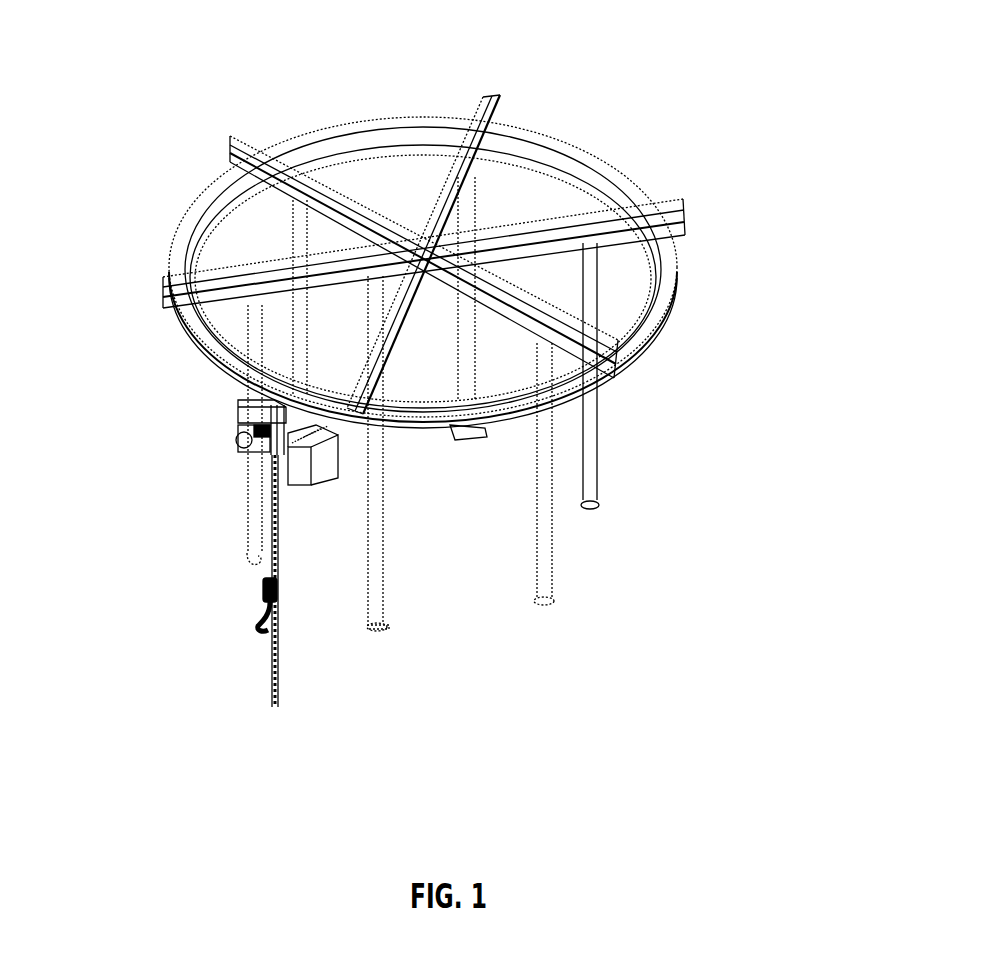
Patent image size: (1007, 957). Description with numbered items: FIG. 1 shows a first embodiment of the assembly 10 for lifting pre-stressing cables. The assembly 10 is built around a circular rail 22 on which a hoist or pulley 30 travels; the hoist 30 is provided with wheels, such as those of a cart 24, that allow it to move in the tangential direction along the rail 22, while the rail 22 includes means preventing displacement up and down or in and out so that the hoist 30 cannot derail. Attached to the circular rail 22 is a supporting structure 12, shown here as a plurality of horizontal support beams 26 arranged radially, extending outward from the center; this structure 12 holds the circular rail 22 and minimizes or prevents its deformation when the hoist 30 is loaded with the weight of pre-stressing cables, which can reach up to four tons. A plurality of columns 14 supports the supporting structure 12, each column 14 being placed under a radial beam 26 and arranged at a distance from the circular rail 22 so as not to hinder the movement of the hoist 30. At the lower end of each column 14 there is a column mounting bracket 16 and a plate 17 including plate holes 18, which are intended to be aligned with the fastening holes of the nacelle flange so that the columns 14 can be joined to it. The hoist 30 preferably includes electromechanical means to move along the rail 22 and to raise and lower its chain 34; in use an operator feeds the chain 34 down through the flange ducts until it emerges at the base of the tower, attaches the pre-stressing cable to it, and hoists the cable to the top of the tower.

The assembly for lifting cable 10 is at (668, 145).
The supporting structure 12 is at (235, 136).
The columns 14 is at (590, 462).
The column mounting bracket 16 is at (545, 603).
The plate 17 is at (378, 632).
The plate holes 18 is at (393, 630).
The rail 22 is at (222, 358).
The cart 24 is at (668, 304).
The horizontal support beams 26 is at (457, 170).
The hoist/pulley 30 is at (243, 447).
The chain 34 is at (273, 662).